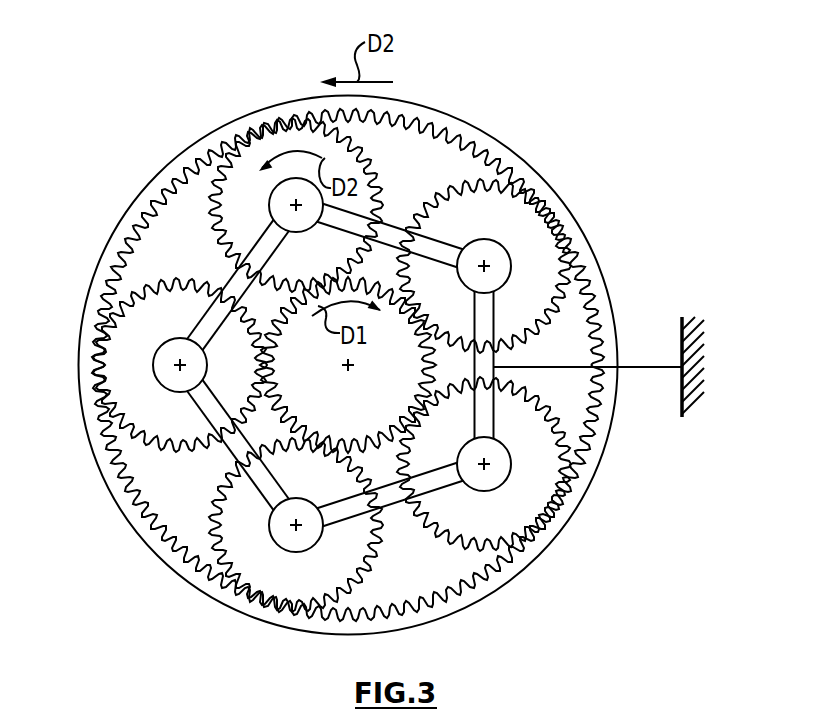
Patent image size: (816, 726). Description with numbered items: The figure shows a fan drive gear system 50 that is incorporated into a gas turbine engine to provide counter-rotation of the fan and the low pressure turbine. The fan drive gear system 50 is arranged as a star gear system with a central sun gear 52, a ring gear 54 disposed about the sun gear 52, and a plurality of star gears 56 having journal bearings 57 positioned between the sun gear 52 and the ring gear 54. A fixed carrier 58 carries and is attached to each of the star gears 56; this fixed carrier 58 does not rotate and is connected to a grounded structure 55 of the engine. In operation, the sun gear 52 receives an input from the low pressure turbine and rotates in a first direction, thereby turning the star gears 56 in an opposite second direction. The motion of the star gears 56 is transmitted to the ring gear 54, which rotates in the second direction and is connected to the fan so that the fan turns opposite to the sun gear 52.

The fan drive gear system 50 is at (452, 72).
The sun gear 52 is at (299, 392).
The ring gear 54 is at (298, 84).
The grounded structure 55 is at (700, 342).
The star gears 56 is at (380, 185).
The journal bearings 57 is at (270, 203).
The fixed carrier 58 is at (487, 414).